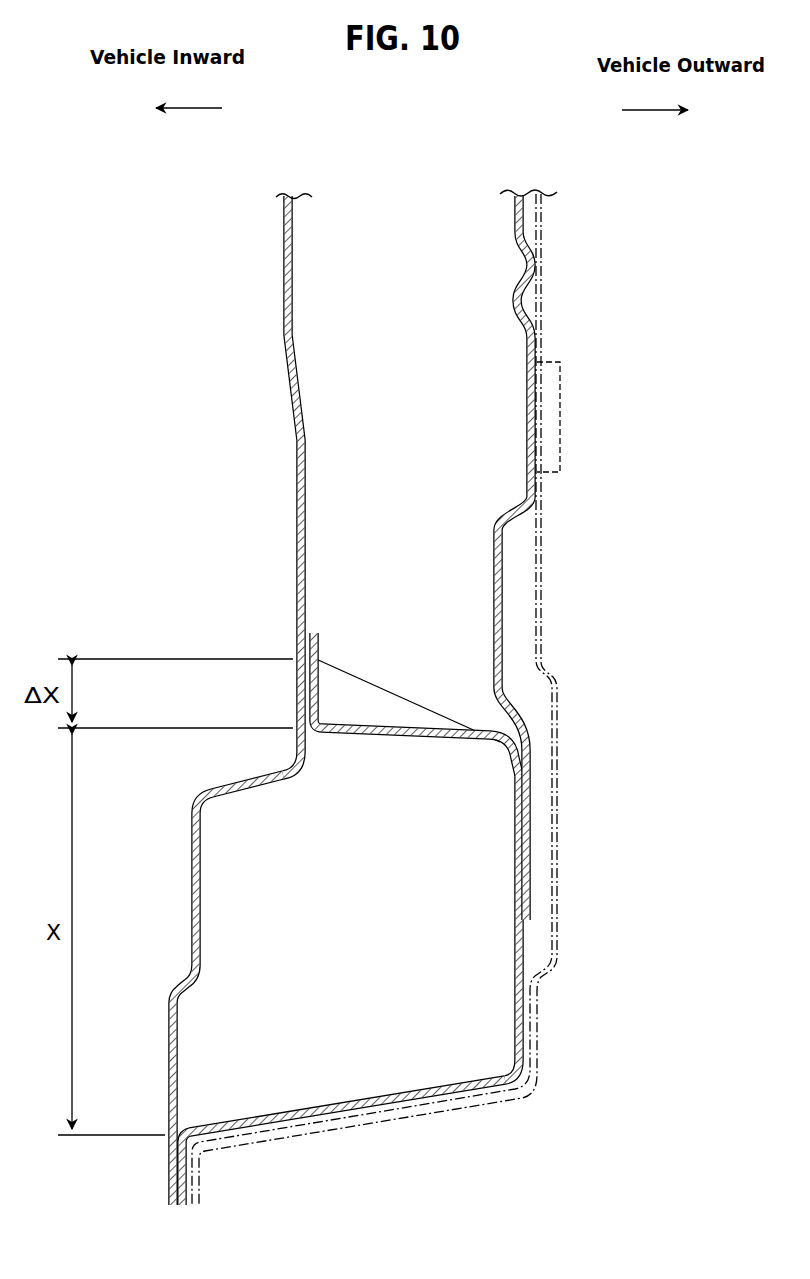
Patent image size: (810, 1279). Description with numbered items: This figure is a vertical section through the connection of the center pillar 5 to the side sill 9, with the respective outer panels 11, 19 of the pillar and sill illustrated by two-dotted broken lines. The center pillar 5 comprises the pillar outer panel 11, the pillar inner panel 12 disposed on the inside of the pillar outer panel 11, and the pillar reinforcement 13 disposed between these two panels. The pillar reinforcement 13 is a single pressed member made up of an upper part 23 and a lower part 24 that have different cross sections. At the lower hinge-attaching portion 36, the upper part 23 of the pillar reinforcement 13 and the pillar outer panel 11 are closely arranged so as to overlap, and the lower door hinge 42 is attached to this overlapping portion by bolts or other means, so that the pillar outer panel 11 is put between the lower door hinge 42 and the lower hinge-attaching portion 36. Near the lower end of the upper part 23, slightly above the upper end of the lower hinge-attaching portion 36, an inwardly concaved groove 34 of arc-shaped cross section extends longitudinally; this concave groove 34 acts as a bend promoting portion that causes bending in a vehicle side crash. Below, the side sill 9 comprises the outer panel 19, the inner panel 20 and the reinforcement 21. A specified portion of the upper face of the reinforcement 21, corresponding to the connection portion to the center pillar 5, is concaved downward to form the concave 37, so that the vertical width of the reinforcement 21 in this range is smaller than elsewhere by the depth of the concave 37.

The center pillar 5 is at (595, 249).
The side sill 9 is at (565, 1083).
The pillar outer panel 11 is at (541, 620).
The pillar inner panel 12 is at (285, 328).
The pillar reinforcement 13 is at (505, 338).
The outer panel 19 is at (553, 855).
The inner panel 20 is at (201, 871).
The reinforcement 21 is at (514, 938).
The upper part 23 is at (512, 212).
The lower part 24 is at (492, 578).
The concave groove 34 is at (521, 305).
The lower hinge-attaching portion 36 is at (526, 407).
The concave 37 is at (352, 722).
The lower door hinge 42 is at (561, 393).